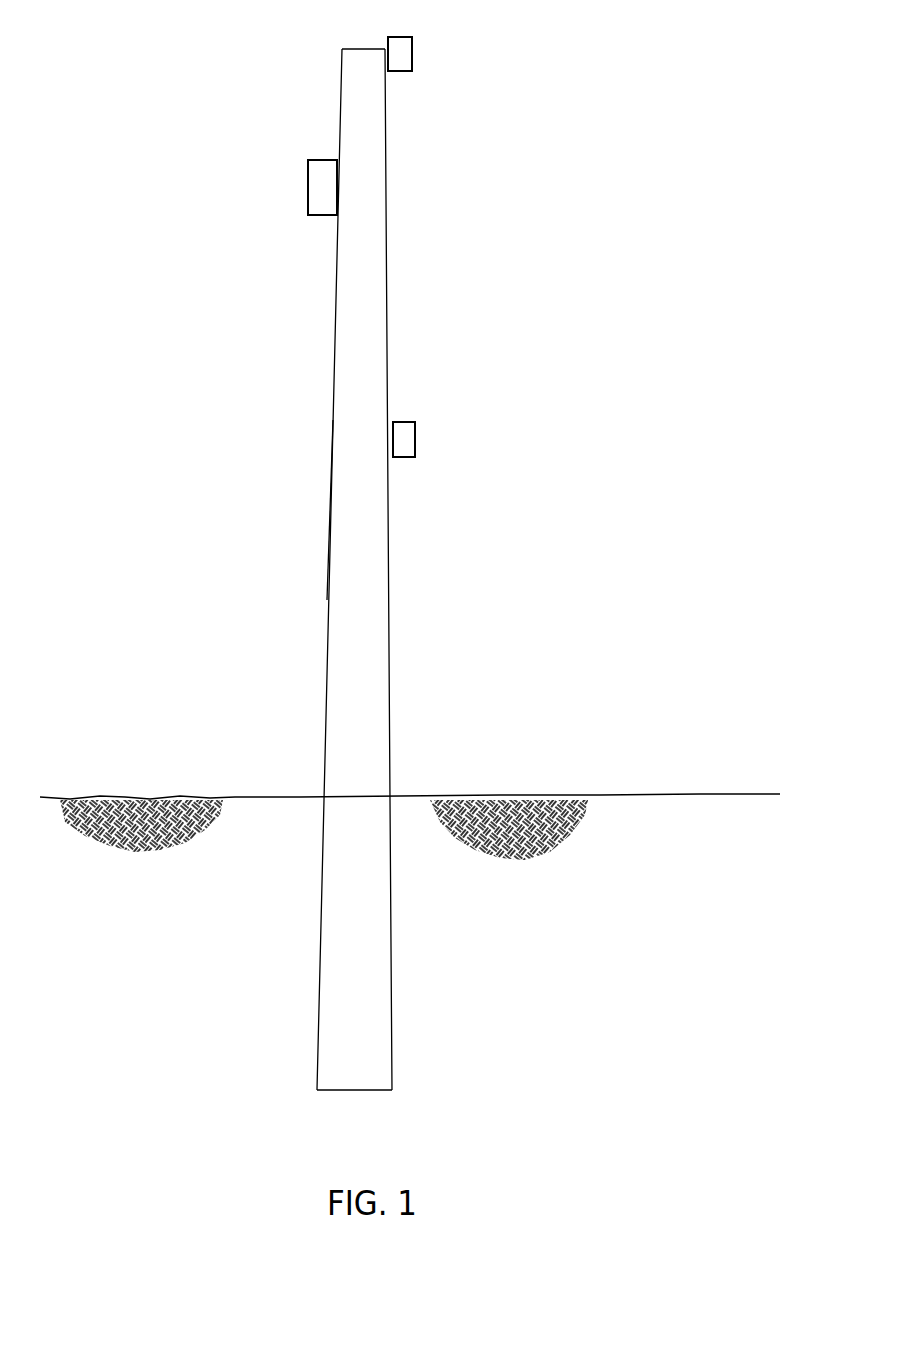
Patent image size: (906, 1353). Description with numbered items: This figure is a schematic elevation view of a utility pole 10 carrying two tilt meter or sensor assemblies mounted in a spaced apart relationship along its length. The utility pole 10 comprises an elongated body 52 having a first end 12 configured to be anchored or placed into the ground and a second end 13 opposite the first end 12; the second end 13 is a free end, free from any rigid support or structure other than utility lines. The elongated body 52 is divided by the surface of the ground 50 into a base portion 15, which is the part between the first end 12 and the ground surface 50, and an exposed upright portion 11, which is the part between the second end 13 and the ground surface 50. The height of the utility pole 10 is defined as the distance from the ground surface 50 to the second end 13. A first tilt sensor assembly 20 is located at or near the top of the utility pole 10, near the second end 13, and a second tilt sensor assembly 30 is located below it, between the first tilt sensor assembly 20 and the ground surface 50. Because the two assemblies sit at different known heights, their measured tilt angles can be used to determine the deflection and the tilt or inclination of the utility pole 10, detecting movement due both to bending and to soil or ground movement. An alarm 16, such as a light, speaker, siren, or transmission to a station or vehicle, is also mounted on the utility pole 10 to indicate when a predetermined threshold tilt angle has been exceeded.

The utility pole 10 is at (334, 567).
The upright portion 11 is at (324, 660).
The first end 12 is at (378, 1090).
The second end 13 is at (354, 48).
The base portion 15 is at (318, 970).
The alarm 16 is at (308, 165).
The first tilt sensor assembly 20 is at (413, 52).
The second tilt sensor assembly 30 is at (415, 437).
The ground surface 50 is at (672, 795).
The elongated body 52 is at (328, 518).